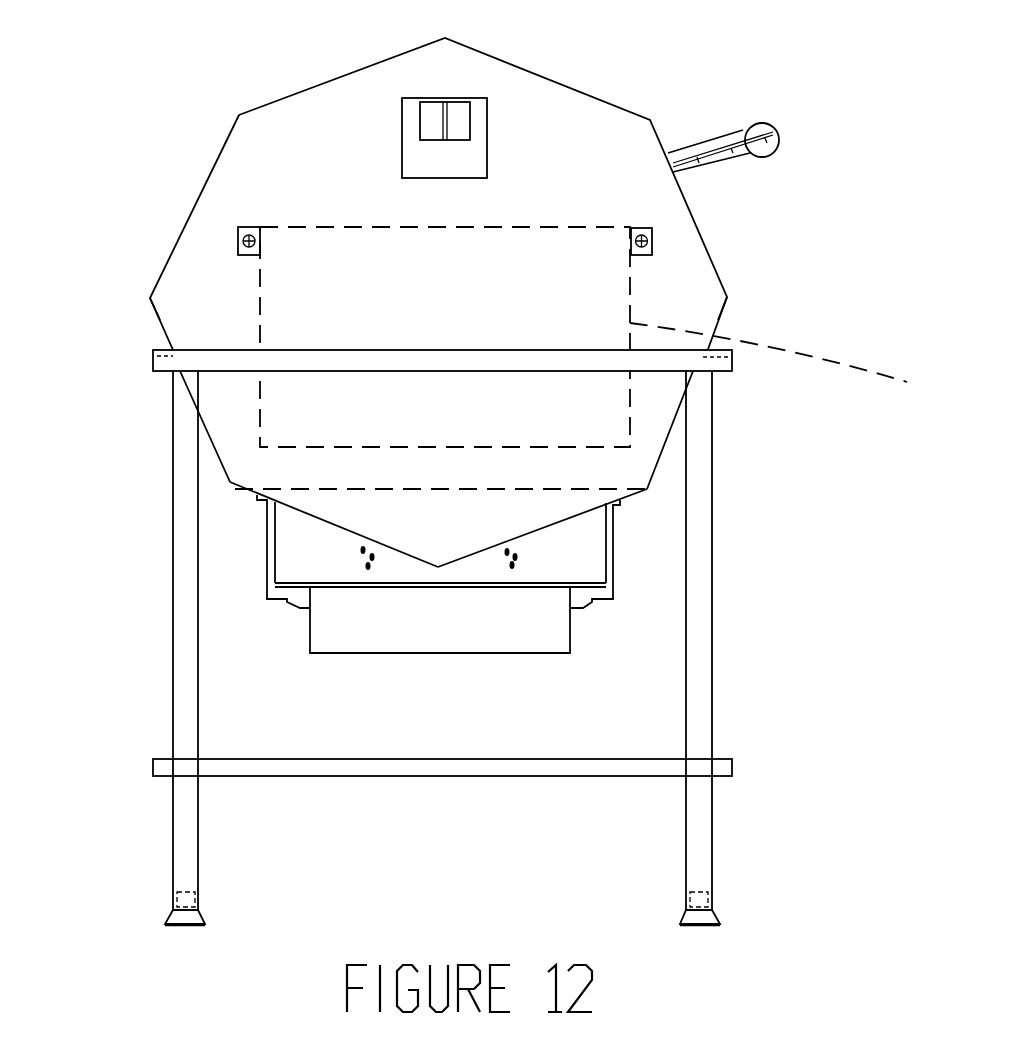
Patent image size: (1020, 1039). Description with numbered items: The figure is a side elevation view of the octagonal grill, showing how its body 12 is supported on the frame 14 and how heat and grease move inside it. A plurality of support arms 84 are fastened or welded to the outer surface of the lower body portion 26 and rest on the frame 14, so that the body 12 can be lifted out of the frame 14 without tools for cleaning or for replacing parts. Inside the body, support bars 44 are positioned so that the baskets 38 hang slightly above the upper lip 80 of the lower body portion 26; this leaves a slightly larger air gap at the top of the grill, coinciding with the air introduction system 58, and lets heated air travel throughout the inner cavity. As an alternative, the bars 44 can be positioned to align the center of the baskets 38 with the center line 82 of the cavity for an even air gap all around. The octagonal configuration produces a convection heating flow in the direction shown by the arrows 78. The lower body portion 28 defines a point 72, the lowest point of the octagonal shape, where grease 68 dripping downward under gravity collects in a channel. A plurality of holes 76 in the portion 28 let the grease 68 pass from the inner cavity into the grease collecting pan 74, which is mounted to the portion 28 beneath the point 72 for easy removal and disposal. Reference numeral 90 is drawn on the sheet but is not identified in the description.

The body 12 is at (700, 225).
The frame 14 is at (697, 518).
The lower body portion 26 is at (647, 493).
The lower body portion 28 is at (221, 482).
The basket 38 is at (786, 356).
The support bar 44 is at (237, 247).
The air introduction system 58 is at (489, 105).
The grease 68 is at (357, 570).
The point 72 is at (420, 655).
The grease collecting pan 74 is at (323, 653).
The holes 76 is at (375, 540).
The arrows 78 is at (283, 163).
The upper lip 80 is at (150, 297).
The center line 82 is at (445, 302).
The support arms 84 is at (153, 352).
The lower hopper wall 90 is at (302, 498).